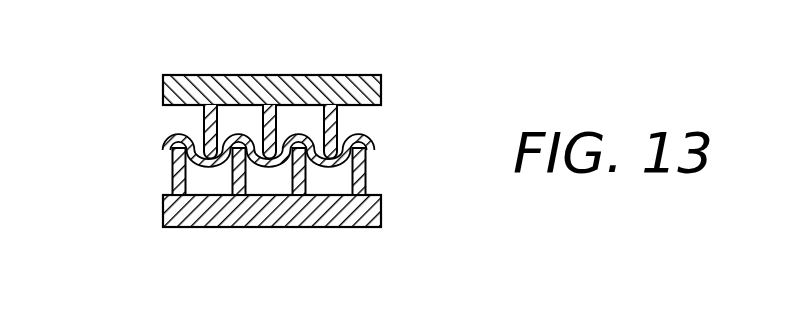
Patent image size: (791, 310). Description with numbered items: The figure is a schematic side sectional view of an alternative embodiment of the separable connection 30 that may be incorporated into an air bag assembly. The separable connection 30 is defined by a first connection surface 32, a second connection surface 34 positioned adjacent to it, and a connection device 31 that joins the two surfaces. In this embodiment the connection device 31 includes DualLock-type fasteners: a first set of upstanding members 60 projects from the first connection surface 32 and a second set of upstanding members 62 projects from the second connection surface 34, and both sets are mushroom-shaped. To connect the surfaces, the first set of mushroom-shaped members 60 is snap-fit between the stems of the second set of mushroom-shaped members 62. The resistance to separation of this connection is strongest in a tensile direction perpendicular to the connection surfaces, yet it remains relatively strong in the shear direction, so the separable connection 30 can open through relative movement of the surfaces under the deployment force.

The separable connection 30 is at (251, 79).
The connection device 31 is at (240, 179).
The first connection surface 32 is at (276, 57).
The second connection surface 34 is at (163, 212).
The first set of upstanding members 60 is at (338, 124).
The second set of upstanding members 62 is at (375, 173).